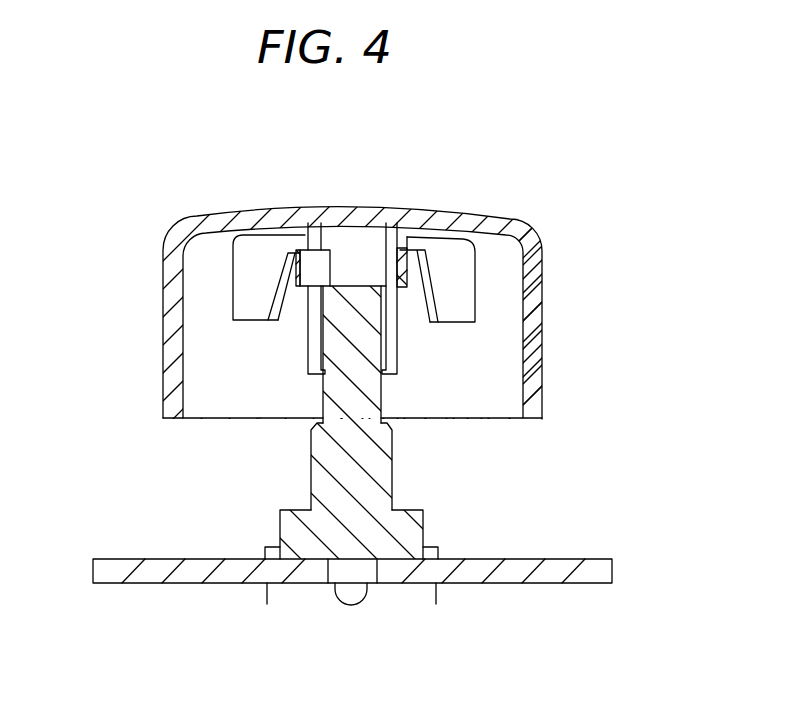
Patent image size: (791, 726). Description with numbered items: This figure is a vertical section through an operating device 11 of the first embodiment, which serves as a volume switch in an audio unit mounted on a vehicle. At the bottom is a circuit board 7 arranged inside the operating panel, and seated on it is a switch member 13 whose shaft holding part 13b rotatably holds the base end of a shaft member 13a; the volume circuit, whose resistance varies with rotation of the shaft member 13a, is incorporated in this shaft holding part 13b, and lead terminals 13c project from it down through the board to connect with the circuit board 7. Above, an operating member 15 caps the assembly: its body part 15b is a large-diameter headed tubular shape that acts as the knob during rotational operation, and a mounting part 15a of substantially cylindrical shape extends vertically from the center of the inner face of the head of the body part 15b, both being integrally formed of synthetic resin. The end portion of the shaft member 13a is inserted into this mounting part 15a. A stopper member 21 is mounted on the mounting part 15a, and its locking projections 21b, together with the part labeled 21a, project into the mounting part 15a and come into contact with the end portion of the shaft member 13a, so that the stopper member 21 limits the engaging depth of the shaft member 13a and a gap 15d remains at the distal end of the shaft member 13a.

The circuit board 7 is at (613, 567).
The operating device 11 is at (539, 218).
The switch member 13 is at (398, 477).
The shaft member 13a is at (360, 343).
The shaft holding part 13b is at (423, 537).
The lead terminals 13c is at (436, 597).
The operating member 15 is at (145, 259).
The mounting part 15a is at (309, 343).
The body part 15b is at (542, 277).
The gap 15d is at (358, 257).
The stopper member 21 is at (340, 257).
The right elastic arm 21a is at (413, 251).
The locking projections 21b is at (303, 267).